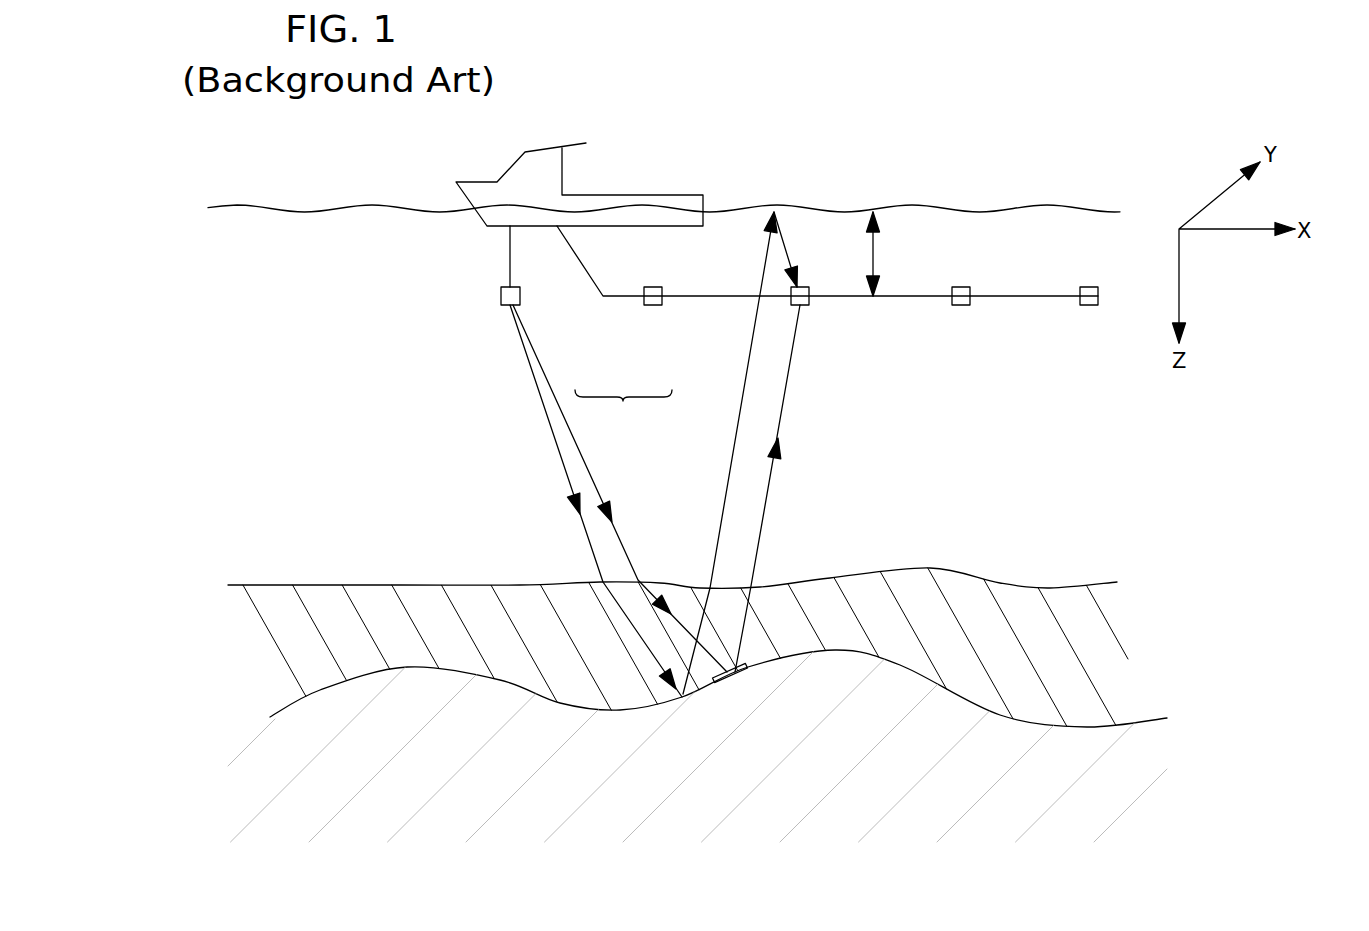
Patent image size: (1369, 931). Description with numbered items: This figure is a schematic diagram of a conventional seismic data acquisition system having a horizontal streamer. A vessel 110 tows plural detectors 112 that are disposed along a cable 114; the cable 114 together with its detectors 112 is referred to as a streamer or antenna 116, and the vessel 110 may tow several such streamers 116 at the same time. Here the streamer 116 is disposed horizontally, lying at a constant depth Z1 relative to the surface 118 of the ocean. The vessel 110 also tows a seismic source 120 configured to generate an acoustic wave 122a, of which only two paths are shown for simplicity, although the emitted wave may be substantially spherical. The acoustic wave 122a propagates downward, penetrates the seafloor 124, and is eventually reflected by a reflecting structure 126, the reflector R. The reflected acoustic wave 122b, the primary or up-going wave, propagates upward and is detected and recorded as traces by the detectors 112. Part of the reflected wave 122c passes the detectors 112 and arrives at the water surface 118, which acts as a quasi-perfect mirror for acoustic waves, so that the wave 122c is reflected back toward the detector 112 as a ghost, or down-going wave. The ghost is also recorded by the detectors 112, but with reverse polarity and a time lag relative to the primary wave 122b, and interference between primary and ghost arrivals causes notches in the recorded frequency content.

The vessel 110 is at (517, 177).
The surface of the ocean 118 is at (807, 207).
The constant depth Z1 is at (874, 244).
The seismic source 120 is at (500, 296).
The cable 114 is at (630, 299).
The detectors 112 is at (652, 307).
The streamer 116 is at (623, 411).
The acoustic wave 122a is at (573, 440).
The reflected acoustic wave 122b is at (767, 513).
The reflected wave 122c is at (748, 350).
The seafloor 124 is at (945, 568).
The reflecting structure 126 is at (925, 690).
The reflector R is at (723, 680).